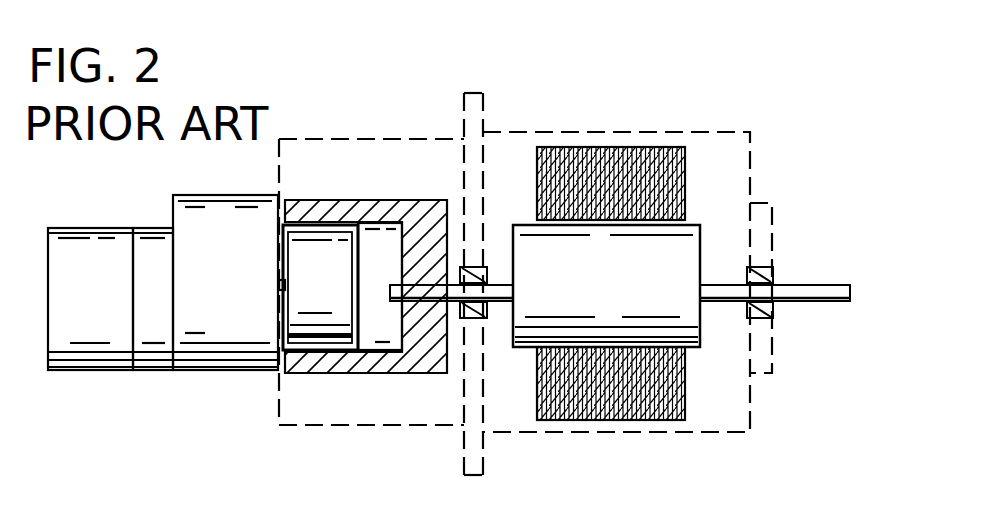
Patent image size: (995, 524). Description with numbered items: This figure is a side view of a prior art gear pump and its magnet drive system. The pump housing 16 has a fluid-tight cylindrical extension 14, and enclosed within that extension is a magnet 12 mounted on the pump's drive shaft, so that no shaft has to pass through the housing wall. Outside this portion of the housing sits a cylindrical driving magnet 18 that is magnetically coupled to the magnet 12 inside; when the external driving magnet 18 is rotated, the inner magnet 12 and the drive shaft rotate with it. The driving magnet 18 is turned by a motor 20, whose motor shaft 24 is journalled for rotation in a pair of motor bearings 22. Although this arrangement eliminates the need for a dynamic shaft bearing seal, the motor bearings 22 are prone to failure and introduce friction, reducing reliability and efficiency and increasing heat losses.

The magnet 12 is at (283, 318).
The fluid-tight cylindrical extension 14 is at (318, 352).
The pump housing 16 is at (212, 377).
The cylindrical driving magnet 18 is at (444, 374).
The motor 20 is at (716, 126).
The motor bearings 22 is at (487, 316).
The motor shaft 24 is at (497, 283).